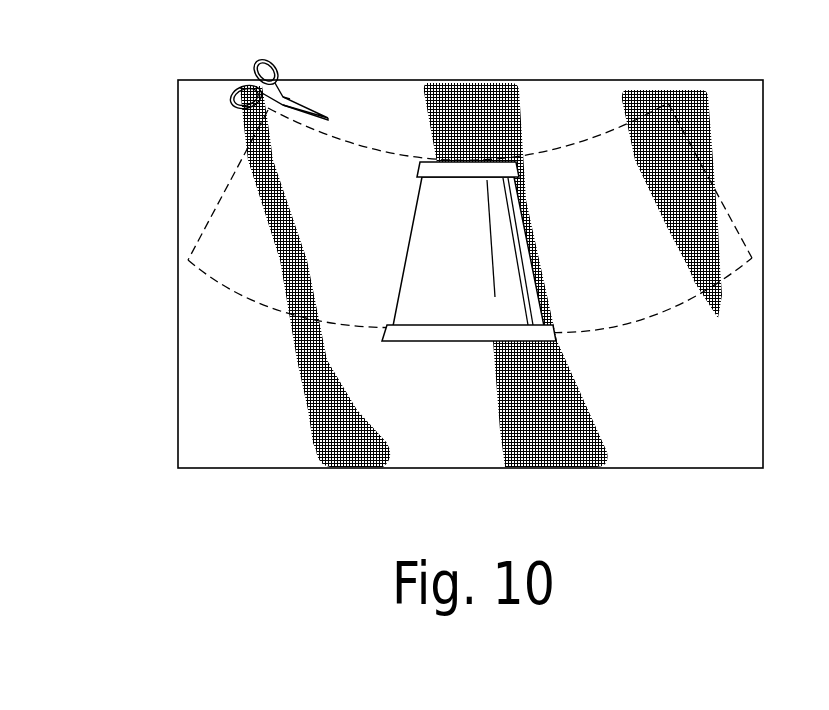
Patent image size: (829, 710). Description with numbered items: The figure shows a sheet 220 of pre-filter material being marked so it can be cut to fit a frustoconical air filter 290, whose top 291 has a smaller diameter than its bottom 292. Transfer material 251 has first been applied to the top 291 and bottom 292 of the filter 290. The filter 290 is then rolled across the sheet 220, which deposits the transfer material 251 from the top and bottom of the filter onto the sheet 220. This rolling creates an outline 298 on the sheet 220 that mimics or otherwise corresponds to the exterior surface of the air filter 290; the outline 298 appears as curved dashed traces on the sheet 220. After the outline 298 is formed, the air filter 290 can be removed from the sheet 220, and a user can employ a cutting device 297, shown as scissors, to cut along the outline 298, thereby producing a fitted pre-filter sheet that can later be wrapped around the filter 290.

The sheet of pre-filter material 220 is at (140, 156).
The transfer material 251 is at (590, 143).
The frustoconical air filter 290 is at (412, 243).
The top 291 is at (477, 162).
The bottom 292 is at (513, 333).
The cutting device 297 is at (256, 64).
The outline 298 is at (257, 292).